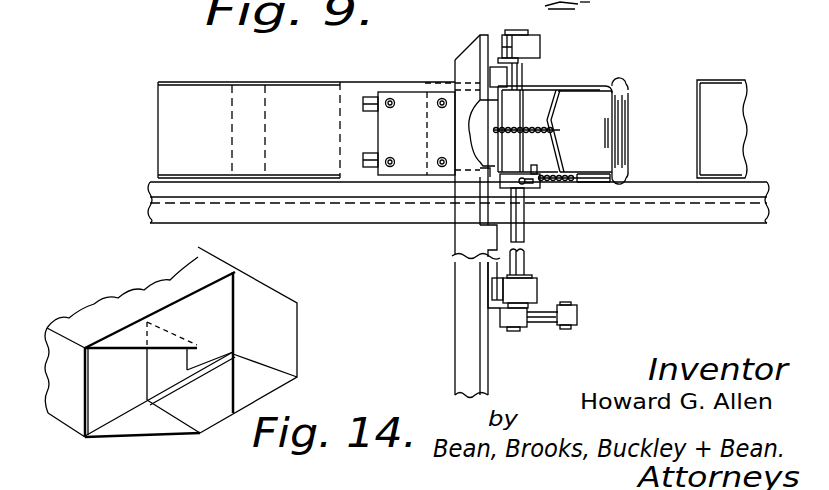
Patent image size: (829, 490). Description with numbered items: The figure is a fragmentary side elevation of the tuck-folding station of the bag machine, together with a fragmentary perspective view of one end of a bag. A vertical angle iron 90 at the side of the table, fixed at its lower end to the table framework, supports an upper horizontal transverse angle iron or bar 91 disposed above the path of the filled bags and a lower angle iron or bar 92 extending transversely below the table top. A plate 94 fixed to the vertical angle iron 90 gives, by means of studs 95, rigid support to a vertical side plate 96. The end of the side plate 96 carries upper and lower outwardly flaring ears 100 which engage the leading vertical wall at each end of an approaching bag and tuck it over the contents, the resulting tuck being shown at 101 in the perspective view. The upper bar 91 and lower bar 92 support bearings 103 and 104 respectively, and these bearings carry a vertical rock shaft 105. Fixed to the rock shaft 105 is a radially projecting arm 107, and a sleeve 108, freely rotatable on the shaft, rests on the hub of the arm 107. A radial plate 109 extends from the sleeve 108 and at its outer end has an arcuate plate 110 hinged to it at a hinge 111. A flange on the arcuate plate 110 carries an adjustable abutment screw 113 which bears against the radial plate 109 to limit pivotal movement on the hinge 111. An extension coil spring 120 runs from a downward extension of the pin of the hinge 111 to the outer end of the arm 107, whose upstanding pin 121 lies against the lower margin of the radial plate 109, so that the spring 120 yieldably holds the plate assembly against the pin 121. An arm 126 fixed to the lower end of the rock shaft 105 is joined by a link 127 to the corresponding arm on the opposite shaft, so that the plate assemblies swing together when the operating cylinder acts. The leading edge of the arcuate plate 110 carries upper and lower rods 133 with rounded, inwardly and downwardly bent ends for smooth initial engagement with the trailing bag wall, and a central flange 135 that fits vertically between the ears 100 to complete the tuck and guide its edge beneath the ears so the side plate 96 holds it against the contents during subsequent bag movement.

In FIG. 9, the vertical angle iron 90 is at (455, 308).
In FIG. 9, the upper horizontal transverse angle iron or bar 91 is at (478, 36).
In FIG. 9, the lower angle iron or bar 92 is at (483, 257).
In FIG. 9, the plate 94 is at (259, 130).
In FIG. 9, the stud 95 is at (437, 102).
In FIG. 9, the vertical side plate 96 is at (348, 88).
In FIG. 9, the outwardly flaring ear 100 is at (516, 100).
In FIG. 14, the tuck 101 is at (118, 368).
In FIG. 9, the bearing 103 is at (540, 44).
In FIG. 9, the bearing 104 is at (530, 289).
In FIG. 9, the vertical rock shaft 105 is at (524, 262).
In FIG. 9, the radially projecting arm 107 is at (531, 188).
In FIG. 9, the sleeve 108 is at (542, 100).
In FIG. 9, the radial plate 109 is at (598, 85).
In FIG. 9, the arcuate plate 110 is at (590, 165).
In FIG. 9, the hinge 111 is at (603, 7).
In FIG. 9, the adjustable abutment screw 113 is at (545, 6).
In FIG. 9, the extension coil spring 120 is at (563, 178).
In FIG. 9, the upstanding pin 121 is at (538, 165).
In FIG. 9, the arm 126 is at (540, 322).
In FIG. 9, the link 127 is at (570, 307).
In FIG. 9, the rod 133 is at (626, 81).
In FIG. 9, the central flange 135 is at (620, 122).